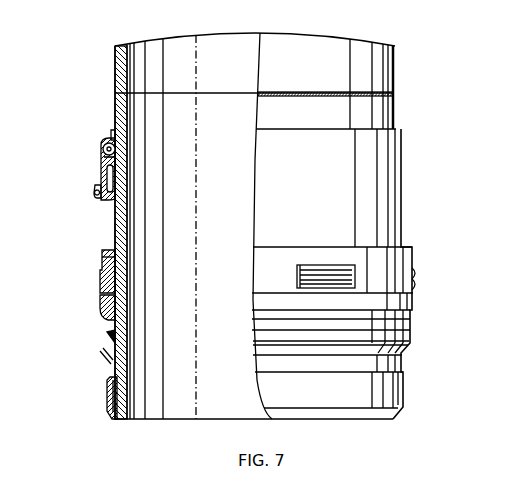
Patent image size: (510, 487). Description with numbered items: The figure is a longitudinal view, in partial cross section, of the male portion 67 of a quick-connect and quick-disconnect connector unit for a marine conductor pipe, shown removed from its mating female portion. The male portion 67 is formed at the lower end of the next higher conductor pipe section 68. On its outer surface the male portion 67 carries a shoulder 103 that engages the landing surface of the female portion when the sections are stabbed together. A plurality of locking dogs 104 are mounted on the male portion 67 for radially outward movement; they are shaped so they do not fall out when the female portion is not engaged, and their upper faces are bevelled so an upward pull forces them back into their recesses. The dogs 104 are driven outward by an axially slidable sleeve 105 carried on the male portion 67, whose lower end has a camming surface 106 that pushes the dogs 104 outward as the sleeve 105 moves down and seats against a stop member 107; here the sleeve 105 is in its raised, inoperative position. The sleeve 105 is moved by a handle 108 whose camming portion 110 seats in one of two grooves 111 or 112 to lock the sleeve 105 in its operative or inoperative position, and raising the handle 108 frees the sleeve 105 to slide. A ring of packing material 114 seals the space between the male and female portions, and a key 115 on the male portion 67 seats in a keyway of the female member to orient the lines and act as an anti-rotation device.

The male portion 67 is at (322, 122).
The conductor pipe section 68 is at (322, 78).
The shoulder 103 is at (108, 360).
The locking dogs 104 is at (101, 280).
The sleeve 105 is at (113, 216).
The camming surface 106 is at (127, 247).
The stop member 107 is at (102, 312).
The handle 108 is at (111, 165).
The camming portion 110 is at (126, 150).
The groove 111 is at (126, 170).
The groove 112 is at (120, 186).
The ring of packing material 114 is at (107, 338).
The key 115 is at (109, 400).